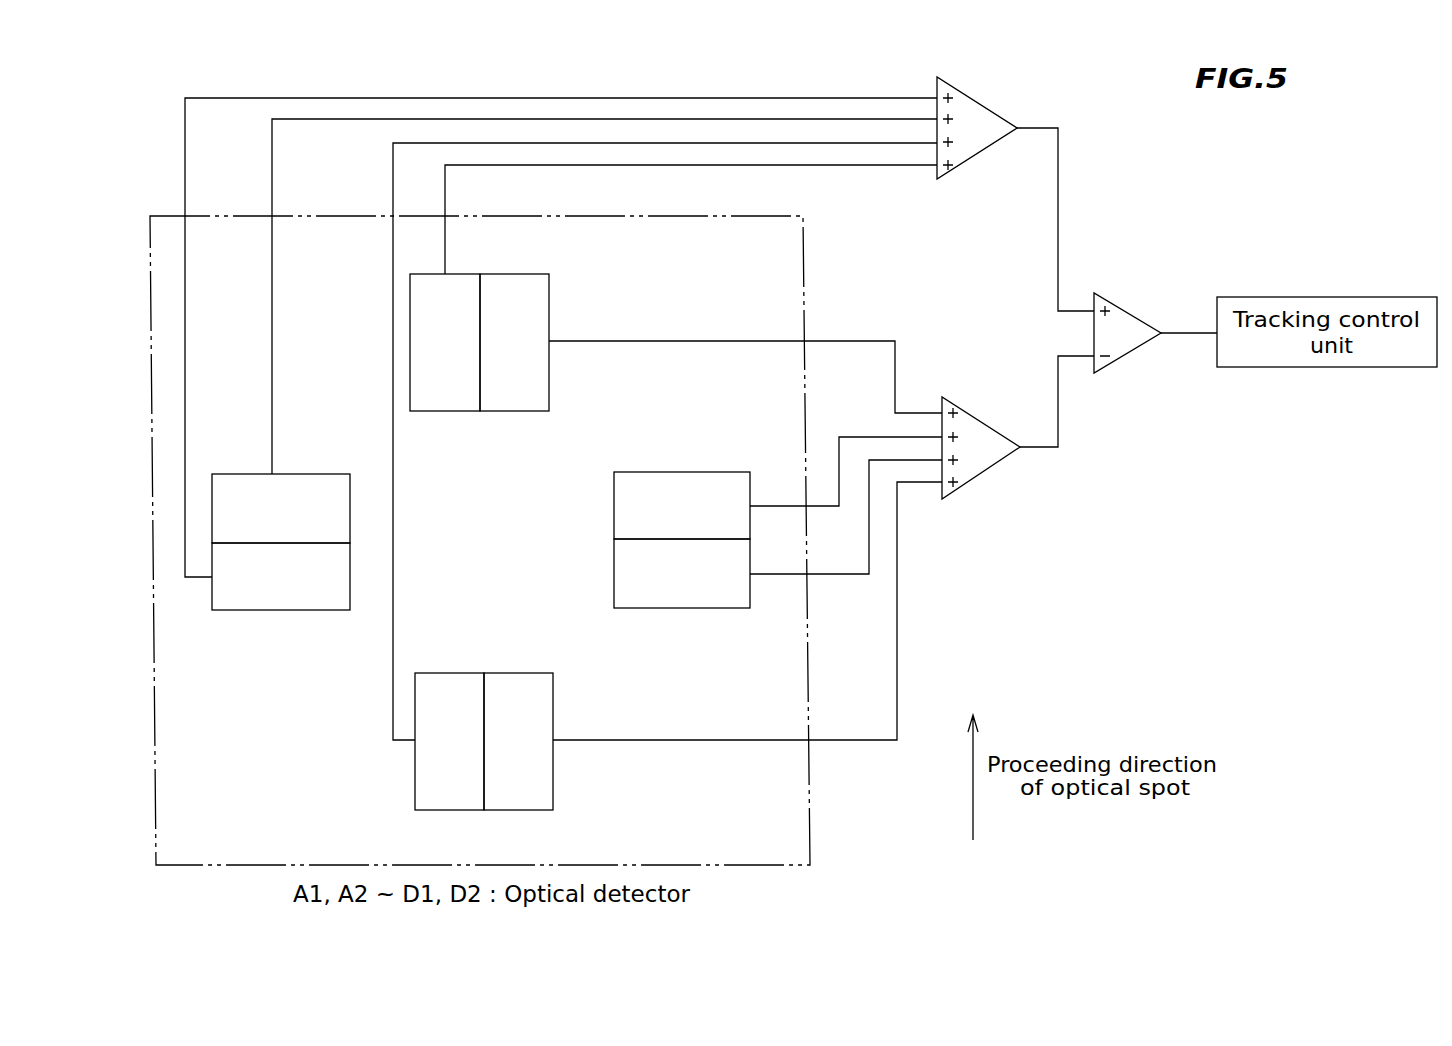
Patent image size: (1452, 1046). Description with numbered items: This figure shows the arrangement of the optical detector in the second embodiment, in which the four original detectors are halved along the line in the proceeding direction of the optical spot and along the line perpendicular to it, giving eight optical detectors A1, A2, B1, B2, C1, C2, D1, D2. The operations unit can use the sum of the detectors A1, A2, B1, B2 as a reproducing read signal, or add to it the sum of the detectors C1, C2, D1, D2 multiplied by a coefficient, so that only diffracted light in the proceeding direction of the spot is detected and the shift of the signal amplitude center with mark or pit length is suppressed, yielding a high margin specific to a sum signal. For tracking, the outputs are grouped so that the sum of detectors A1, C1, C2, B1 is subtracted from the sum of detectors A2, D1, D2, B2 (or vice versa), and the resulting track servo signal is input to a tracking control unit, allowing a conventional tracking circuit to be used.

The optical detector A1 is at (447, 411).
The optical detector A2 is at (549, 297).
The optical detector B1 is at (451, 673).
The optical detector B2 is at (520, 673).
The optical detector C1 is at (317, 473).
The optical detector C2 is at (272, 611).
The optical detector D1 is at (677, 471).
The optical detector D2 is at (678, 610).